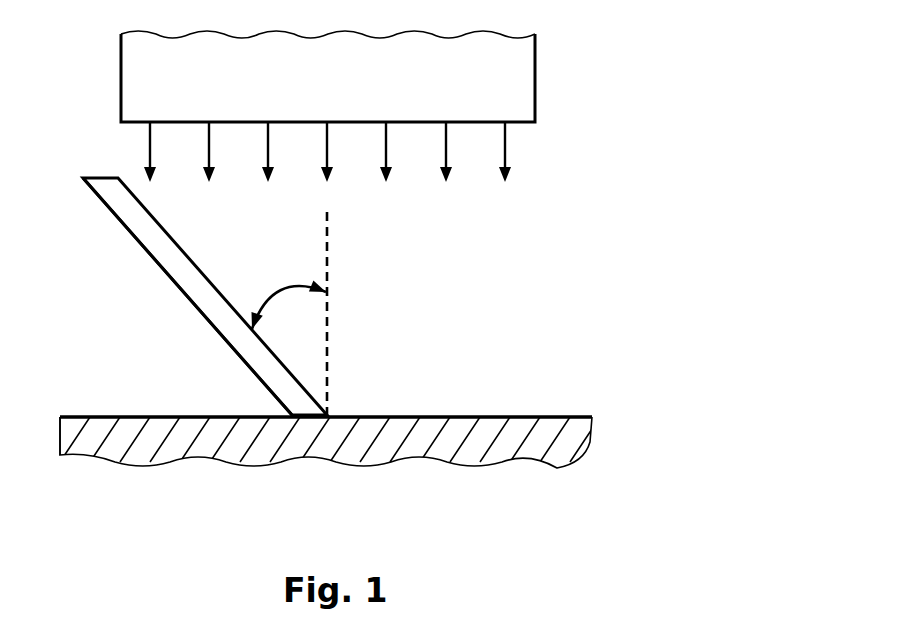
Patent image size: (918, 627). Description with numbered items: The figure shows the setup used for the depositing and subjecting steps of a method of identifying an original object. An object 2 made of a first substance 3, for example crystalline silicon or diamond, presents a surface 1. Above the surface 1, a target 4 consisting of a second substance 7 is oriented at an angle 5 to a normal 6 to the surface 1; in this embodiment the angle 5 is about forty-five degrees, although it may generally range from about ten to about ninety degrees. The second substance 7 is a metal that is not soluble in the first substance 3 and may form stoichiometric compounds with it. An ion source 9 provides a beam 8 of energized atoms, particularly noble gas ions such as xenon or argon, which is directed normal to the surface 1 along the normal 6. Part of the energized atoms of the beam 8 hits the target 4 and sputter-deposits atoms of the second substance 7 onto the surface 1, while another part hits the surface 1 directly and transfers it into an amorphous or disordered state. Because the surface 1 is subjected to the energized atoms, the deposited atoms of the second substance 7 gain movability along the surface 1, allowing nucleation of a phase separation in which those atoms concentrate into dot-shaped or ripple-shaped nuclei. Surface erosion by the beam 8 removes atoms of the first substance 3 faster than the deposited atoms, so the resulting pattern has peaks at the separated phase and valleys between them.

The surface 1 is at (552, 417).
The object 2 is at (575, 432).
The first substance 3 is at (483, 430).
The target 4 is at (167, 258).
The angle 5 is at (278, 295).
The normal 6 is at (330, 343).
The second substance 7 is at (123, 205).
The beam 8 is at (522, 145).
The ion source 9 is at (537, 86).